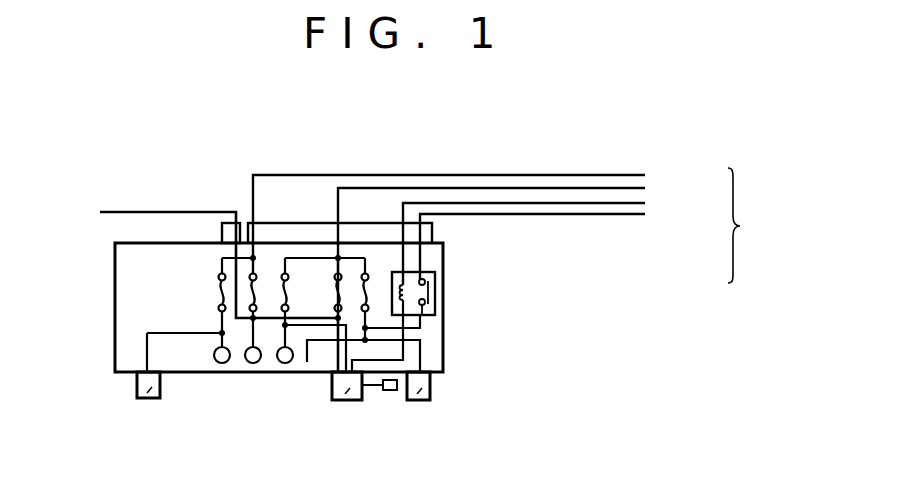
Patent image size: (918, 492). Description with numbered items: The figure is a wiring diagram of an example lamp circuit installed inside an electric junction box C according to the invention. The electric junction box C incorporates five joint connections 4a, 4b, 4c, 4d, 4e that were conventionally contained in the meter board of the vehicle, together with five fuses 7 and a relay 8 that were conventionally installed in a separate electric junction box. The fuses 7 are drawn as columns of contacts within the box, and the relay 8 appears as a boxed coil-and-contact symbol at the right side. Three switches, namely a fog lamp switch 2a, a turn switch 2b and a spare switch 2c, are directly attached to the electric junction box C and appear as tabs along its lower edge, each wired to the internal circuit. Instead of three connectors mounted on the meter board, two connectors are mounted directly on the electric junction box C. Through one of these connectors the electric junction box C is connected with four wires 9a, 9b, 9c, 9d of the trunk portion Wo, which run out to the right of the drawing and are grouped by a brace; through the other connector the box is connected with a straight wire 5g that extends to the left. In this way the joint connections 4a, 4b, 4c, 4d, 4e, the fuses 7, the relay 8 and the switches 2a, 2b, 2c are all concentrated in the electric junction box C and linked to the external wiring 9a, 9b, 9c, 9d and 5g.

The electric junction box C is at (443, 348).
The fog lamp switch 2a is at (152, 398).
The turn switch 2b is at (342, 403).
The spare switch 2c is at (420, 403).
The straight wire 5g is at (118, 212).
The wire 9a is at (613, 175).
The wire 9b is at (645, 183).
The wire 9c is at (645, 202).
The wire 9d is at (645, 215).
The trunk portion Wo is at (755, 225).
The fuse 7 is at (258, 290).
The relay 8 is at (435, 287).
The joint connection 4a is at (365, 339).
The joint connection 4b is at (334, 328).
The joint connection 4c is at (283, 330).
The joint connection 4d is at (216, 337).
The joint connection 4e is at (249, 325).